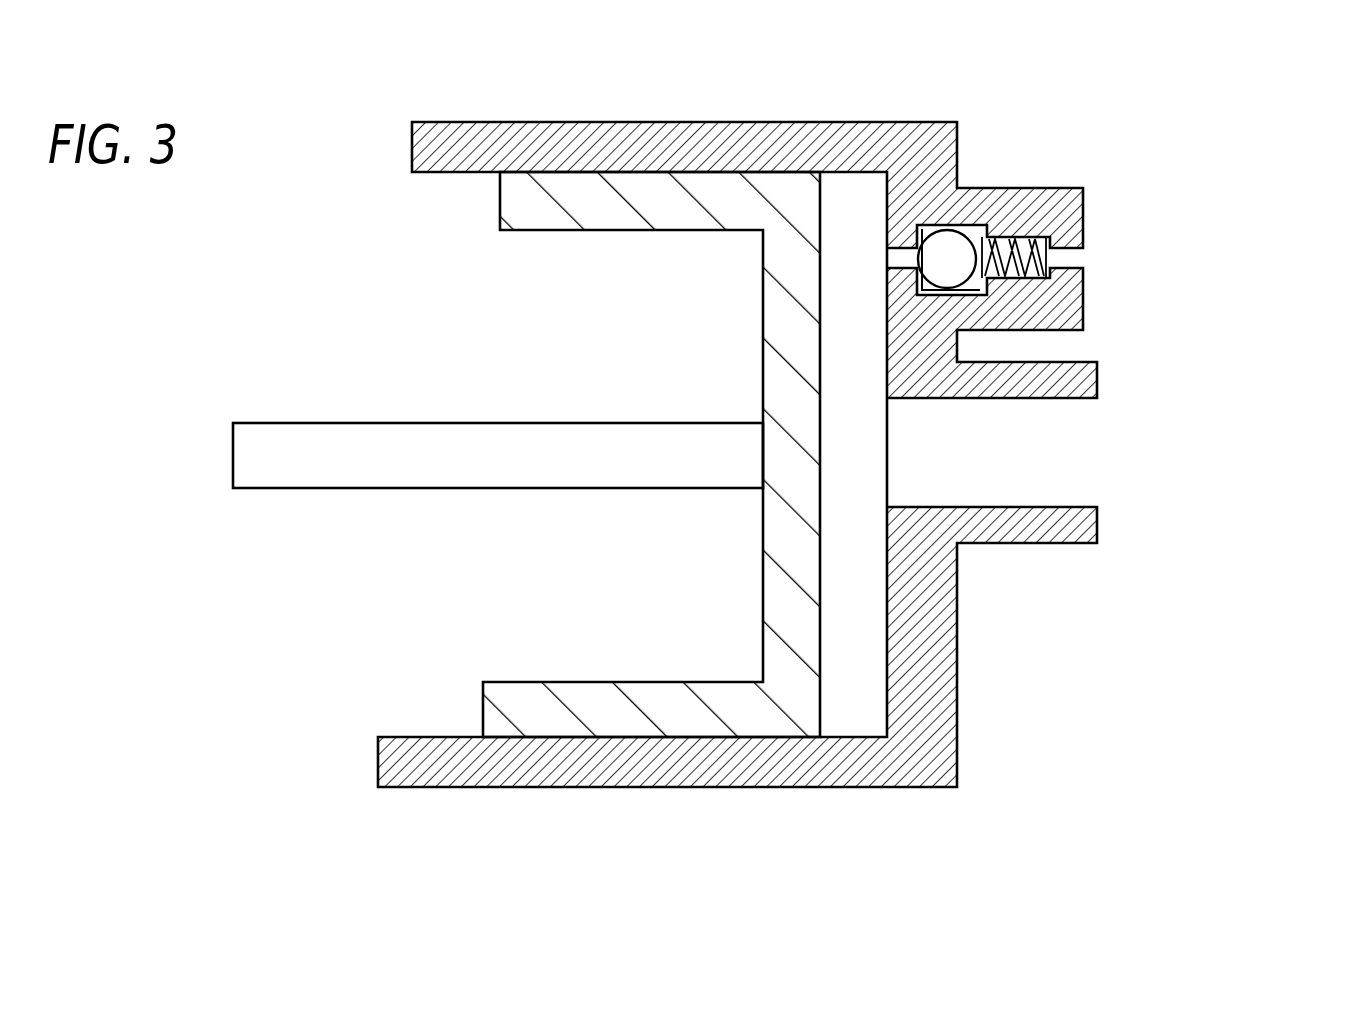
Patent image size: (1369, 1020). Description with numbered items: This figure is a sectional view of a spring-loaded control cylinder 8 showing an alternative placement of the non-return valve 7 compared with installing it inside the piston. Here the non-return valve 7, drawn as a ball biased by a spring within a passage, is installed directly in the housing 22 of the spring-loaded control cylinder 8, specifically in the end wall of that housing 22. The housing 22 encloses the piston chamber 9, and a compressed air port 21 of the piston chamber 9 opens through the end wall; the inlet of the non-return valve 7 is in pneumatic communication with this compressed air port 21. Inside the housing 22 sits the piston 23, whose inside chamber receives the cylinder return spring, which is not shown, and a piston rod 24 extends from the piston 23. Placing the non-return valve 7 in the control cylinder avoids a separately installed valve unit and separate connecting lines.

The non-return valve 7 is at (1113, 272).
The spring-loaded control cylinder 8 is at (1237, 148).
The piston chamber 9 is at (842, 657).
The compressed air port 21 is at (1052, 480).
The housing 22 is at (907, 772).
The piston 23 is at (590, 215).
The piston rod 24 is at (283, 455).